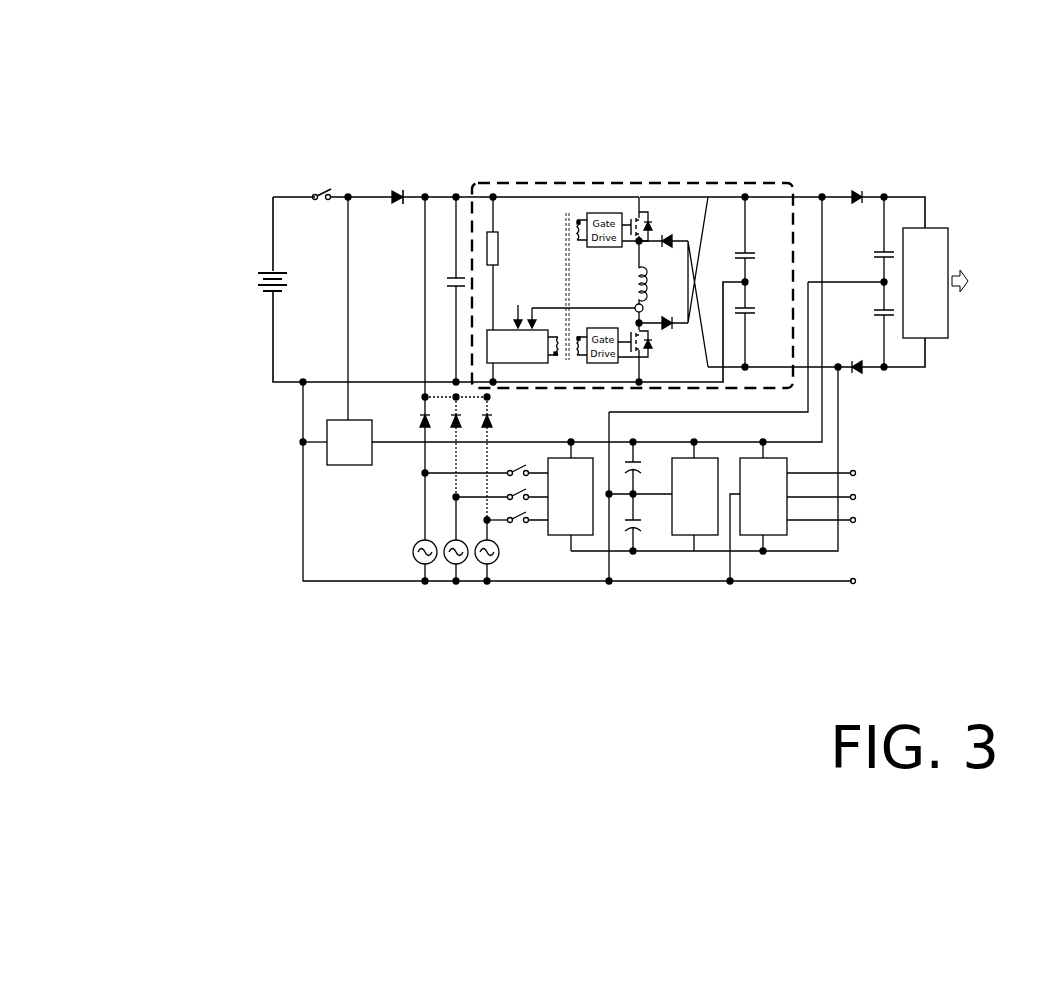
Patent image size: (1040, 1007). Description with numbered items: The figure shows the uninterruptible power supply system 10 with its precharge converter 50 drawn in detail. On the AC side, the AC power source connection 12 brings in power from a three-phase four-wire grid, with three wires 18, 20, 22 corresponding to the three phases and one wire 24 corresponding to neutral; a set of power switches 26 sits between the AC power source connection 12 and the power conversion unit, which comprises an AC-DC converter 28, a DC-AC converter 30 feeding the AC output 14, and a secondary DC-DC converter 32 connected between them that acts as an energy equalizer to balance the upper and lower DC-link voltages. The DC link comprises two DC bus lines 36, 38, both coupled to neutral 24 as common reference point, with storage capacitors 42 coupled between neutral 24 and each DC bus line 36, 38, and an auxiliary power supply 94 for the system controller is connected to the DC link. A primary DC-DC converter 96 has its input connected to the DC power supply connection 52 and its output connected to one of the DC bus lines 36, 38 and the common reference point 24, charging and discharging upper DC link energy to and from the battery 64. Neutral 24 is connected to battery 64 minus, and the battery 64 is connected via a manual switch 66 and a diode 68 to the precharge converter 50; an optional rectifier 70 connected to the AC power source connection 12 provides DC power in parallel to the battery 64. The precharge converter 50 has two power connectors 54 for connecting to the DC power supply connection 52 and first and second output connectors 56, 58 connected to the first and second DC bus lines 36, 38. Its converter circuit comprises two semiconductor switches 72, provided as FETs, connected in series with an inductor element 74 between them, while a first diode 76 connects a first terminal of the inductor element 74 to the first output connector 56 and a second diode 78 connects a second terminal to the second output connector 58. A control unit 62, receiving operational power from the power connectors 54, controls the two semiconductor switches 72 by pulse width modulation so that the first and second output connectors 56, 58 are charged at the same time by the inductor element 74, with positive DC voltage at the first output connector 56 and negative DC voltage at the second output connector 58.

The uninterruptible power supply system 10 is at (886, 156).
The AC power source connection 12 is at (402, 543).
The AC output 14 is at (878, 496).
The phase wire 18 is at (425, 473).
The phase wire 20 is at (450, 505).
The phase wire 22 is at (487, 522).
The neutral 24 is at (270, 367).
The power switches 26 is at (517, 518).
The AC-DC converter 28 is at (562, 507).
The DC-AC converter 30 is at (753, 507).
The secondary DC-DC converter 32 is at (698, 507).
The first DC bus line 36 is at (827, 378).
The second DC bus line 38 is at (836, 405).
The storage capacitors 42 is at (884, 250).
The precharge converter 50 is at (806, 314).
The DC power supply connection 52 is at (250, 313).
The power connectors 54 is at (471, 318).
The first output connector 56 is at (793, 196).
The second output connector 58 is at (808, 280).
The control unit 62 is at (498, 338).
The battery 64 is at (258, 276).
The manual switch 66 is at (315, 192).
The diode 68 is at (397, 186).
The rectifier 70 is at (400, 405).
The semiconductor switches 72 is at (637, 330).
The inductor element 74 is at (641, 267).
The first diode 76 is at (669, 319).
The second diode 78 is at (668, 236).
The auxiliary power supply 94 is at (940, 228).
The primary DC-DC converter 96 is at (327, 432).